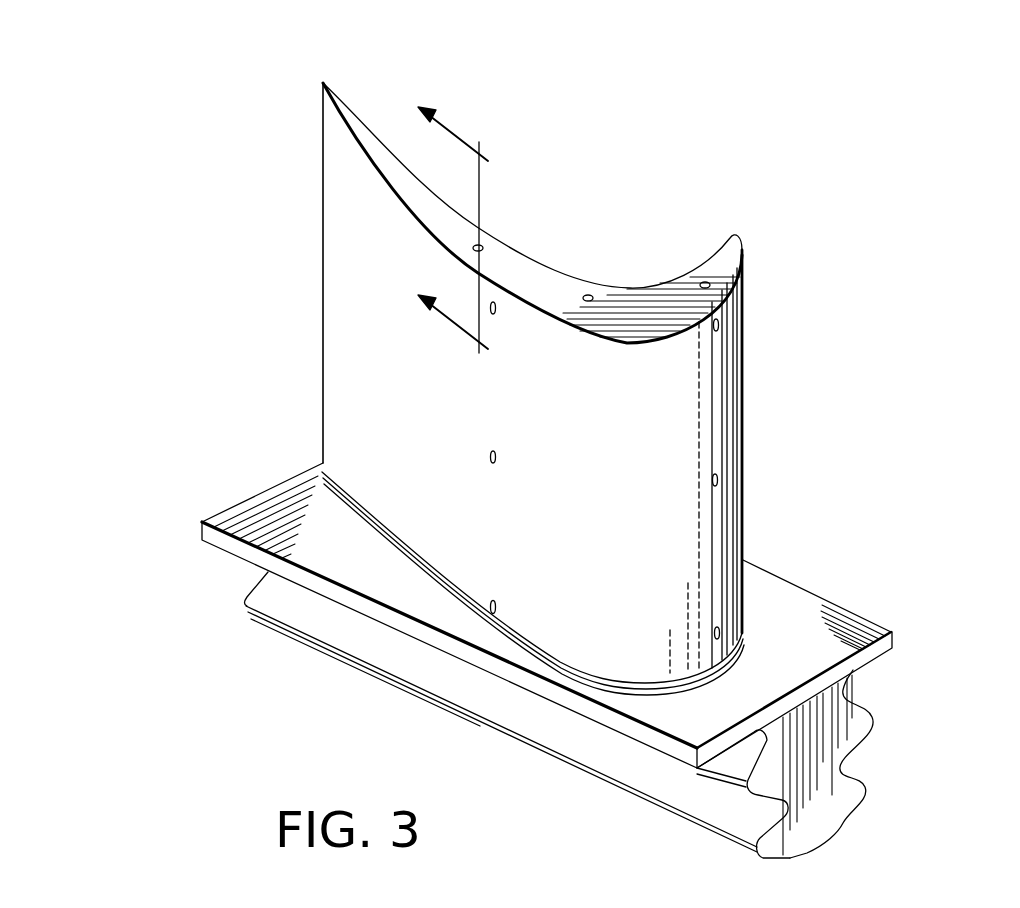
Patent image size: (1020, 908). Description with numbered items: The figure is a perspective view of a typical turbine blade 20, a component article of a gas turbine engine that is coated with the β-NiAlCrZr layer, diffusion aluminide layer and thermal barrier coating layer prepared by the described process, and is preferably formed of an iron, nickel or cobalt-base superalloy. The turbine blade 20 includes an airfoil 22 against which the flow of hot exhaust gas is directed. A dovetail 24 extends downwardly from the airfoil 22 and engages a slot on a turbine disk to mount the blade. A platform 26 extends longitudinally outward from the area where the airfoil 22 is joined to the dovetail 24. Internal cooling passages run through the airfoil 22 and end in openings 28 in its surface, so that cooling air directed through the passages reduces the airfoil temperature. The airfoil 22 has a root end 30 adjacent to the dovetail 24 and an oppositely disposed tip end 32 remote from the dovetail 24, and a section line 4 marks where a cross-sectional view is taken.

The turbine blade 20 is at (295, 318).
The airfoil 22 is at (347, 213).
The dovetail 24 is at (250, 590).
The platform 26 is at (253, 513).
The trailing edge cooling holes 28 is at (708, 286).
The pressure side fillet 30 is at (517, 623).
The airfoil tip 32 is at (527, 270).
The section line 4- 4 is at (441, 222).